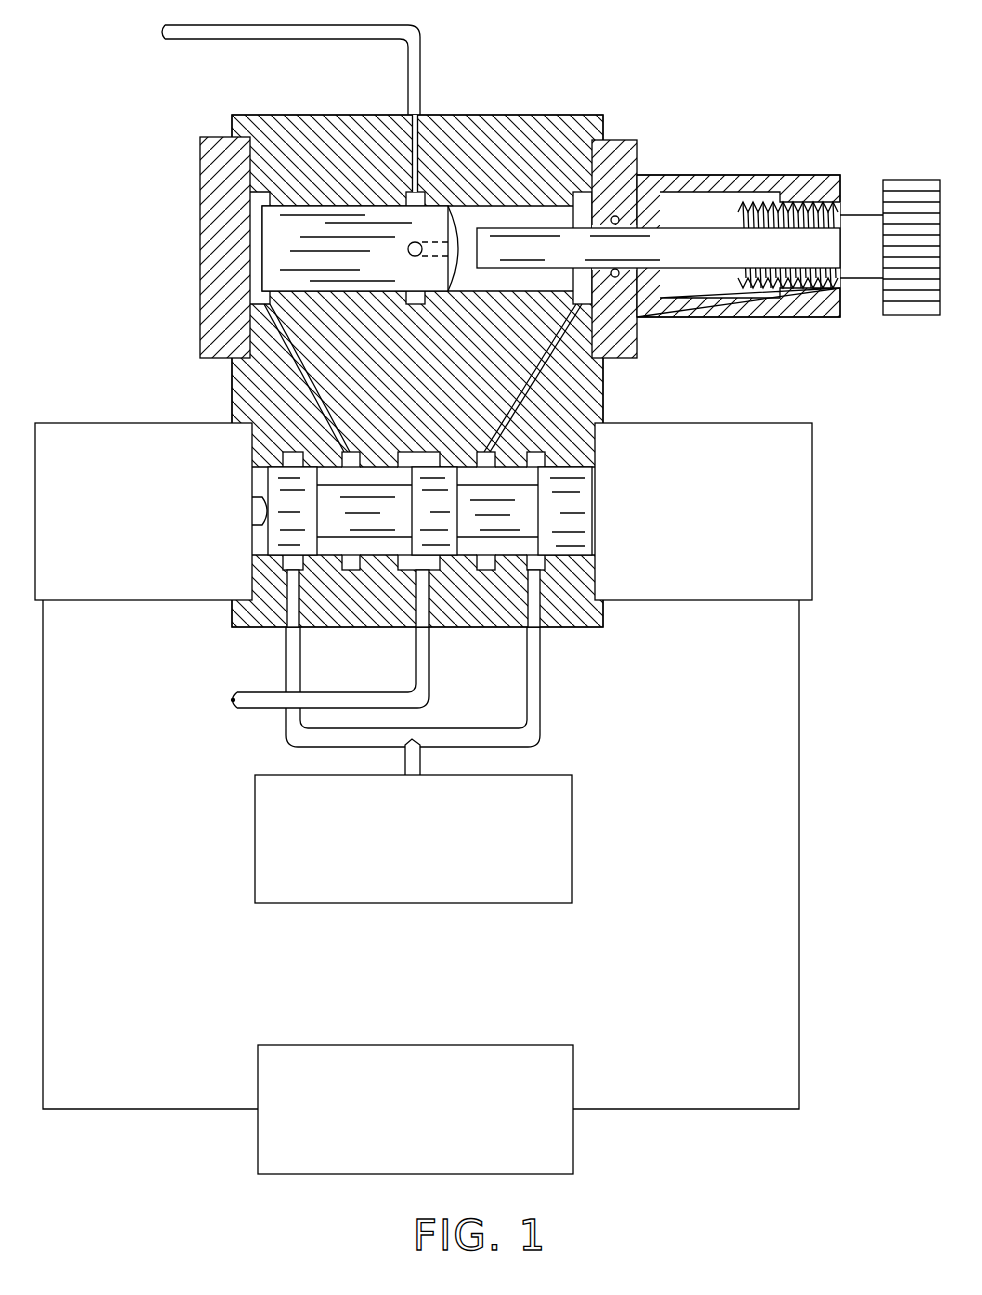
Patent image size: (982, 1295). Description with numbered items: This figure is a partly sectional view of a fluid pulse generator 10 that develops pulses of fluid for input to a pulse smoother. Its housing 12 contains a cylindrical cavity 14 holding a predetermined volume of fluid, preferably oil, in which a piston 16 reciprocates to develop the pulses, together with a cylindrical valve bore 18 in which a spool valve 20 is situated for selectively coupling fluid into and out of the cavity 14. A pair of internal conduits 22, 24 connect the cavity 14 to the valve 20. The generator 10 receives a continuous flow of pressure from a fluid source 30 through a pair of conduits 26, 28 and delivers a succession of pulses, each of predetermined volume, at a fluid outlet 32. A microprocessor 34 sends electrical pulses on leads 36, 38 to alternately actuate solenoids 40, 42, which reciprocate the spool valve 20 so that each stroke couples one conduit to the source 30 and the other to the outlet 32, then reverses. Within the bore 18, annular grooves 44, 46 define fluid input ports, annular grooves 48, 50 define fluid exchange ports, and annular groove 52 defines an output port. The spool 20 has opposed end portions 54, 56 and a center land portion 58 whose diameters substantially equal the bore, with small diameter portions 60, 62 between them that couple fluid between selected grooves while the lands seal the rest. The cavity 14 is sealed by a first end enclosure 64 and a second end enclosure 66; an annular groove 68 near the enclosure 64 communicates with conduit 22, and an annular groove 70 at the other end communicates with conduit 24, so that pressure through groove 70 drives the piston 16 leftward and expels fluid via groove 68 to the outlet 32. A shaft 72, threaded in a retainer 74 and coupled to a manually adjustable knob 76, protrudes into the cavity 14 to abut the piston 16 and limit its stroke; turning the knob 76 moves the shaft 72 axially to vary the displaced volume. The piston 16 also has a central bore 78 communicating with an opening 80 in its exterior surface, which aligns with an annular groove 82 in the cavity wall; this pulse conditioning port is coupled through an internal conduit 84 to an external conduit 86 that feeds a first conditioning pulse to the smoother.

The fluid pulse generator 10 is at (188, 122).
The housing 12 is at (303, 122).
The cylindrical cavity 14 is at (528, 213).
The piston 16 is at (380, 247).
The cylindrical valve bore 18 is at (256, 483).
The spool valve 20 is at (385, 540).
The internal conduit 22 is at (322, 397).
The internal conduit 24 is at (512, 396).
The conduit 26 is at (286, 664).
The conduit 28 is at (542, 672).
The fluid source 30 is at (404, 889).
The fluid outlet 32 is at (378, 695).
The microprocessor 34 is at (399, 1155).
The lead 36 is at (694, 1109).
The lead 38 is at (178, 1109).
The solenoid 40 is at (128, 574).
The solenoid 42 is at (688, 574).
The annular groove 44 is at (300, 456).
The annular groove 46 is at (540, 458).
The annular groove 48 is at (353, 462).
The annular groove 50 is at (486, 460).
The annular groove 52 is at (408, 460).
The spool end portion 54 is at (281, 540).
The spool end portion 56 is at (578, 545).
The center land portion 58 is at (440, 550).
The small diameter portion 60 is at (335, 520).
The small diameter portion 62 is at (513, 525).
The first end enclosure 64 is at (200, 240).
The second end enclosure 66 is at (630, 162).
The annular groove 68 is at (262, 194).
The annular groove 70 is at (583, 195).
The shaft 72 is at (538, 263).
The retainer 74 is at (795, 180).
The manually adjustable knob 76 is at (897, 180).
The bore 78 is at (455, 246).
The opening 80 is at (408, 247).
The annular groove 82 is at (408, 193).
The internal conduit 84 is at (420, 175).
The external conduit 86 is at (345, 26).